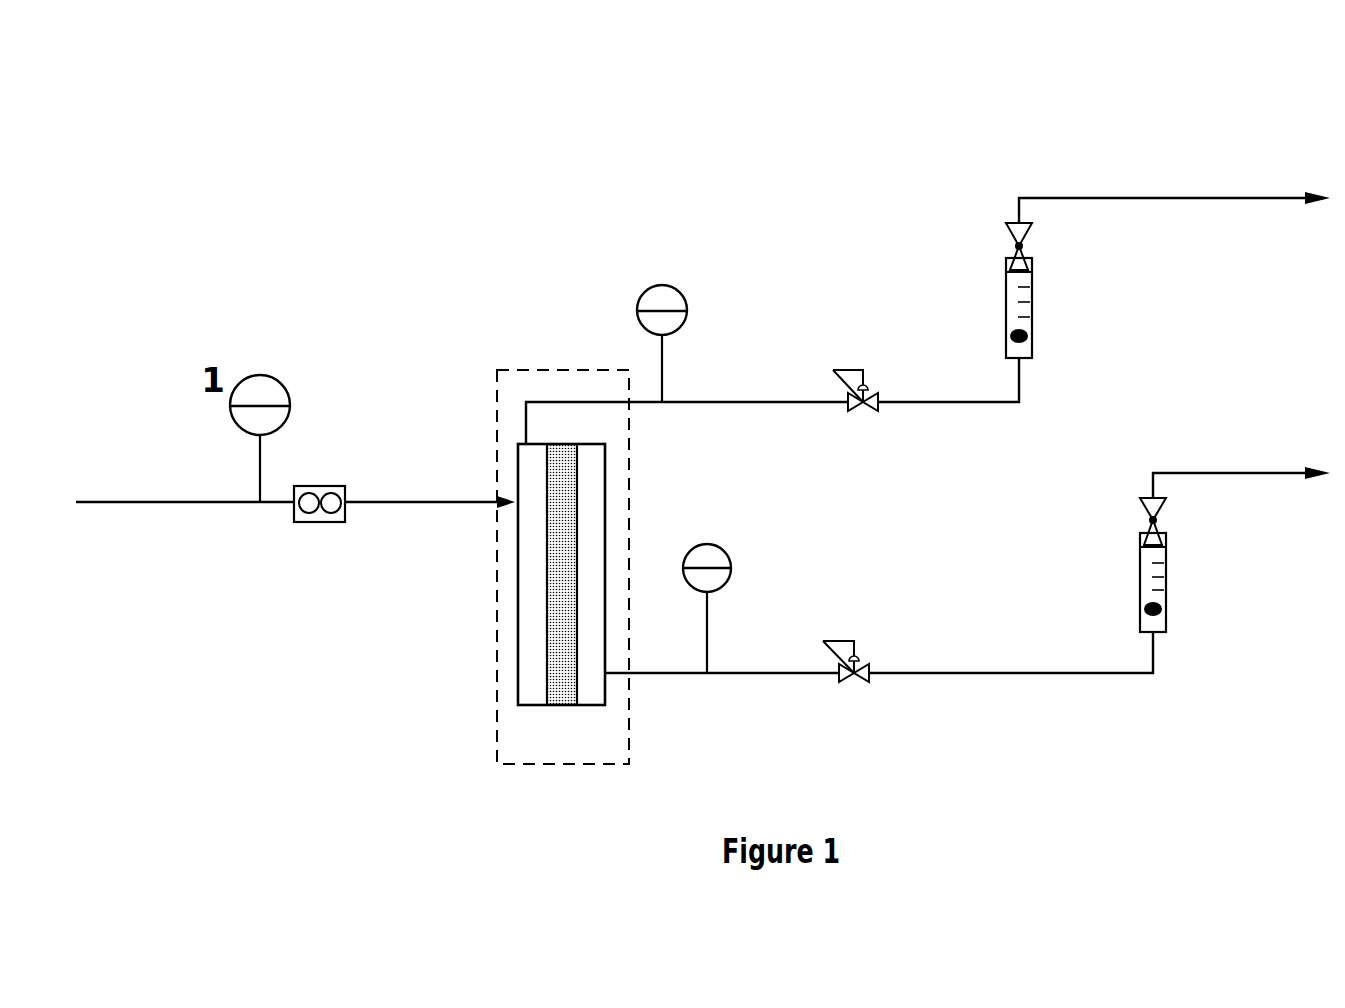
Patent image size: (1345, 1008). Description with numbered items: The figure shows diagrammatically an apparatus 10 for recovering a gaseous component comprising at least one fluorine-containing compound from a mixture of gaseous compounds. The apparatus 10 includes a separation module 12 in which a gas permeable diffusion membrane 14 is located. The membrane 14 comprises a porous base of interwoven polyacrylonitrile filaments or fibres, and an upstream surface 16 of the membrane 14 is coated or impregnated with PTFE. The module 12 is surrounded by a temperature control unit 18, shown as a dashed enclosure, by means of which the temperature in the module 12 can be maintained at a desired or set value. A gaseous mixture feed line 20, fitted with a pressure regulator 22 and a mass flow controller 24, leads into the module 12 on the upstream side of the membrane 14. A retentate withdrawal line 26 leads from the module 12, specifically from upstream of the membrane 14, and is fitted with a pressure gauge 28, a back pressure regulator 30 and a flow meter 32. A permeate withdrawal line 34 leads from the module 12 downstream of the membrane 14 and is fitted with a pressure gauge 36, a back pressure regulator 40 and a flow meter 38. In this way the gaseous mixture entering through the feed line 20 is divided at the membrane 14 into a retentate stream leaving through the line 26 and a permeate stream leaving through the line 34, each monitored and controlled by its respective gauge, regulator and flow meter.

The apparatus 10 is at (1235, 122).
The separation module 12 is at (507, 622).
The gas permeable diffusion membrane 14 is at (562, 696).
The upstream surface 16 is at (547, 478).
The temperature control unit 18 is at (630, 717).
The gaseous mixture feed line 20 is at (120, 500).
The pressure regulator 22 is at (290, 380).
The mass flow controller 24 is at (297, 524).
The retentate withdrawal line 26 is at (757, 398).
The pressure gauge 28 is at (640, 285).
The back pressure regulator 30 is at (873, 365).
The flow meter 32 is at (1035, 310).
The permeate withdrawal line 34 is at (1020, 672).
The pressure gauge 36 is at (730, 537).
The flow meter 38 is at (1172, 572).
The back pressure regulator 40 is at (863, 643).